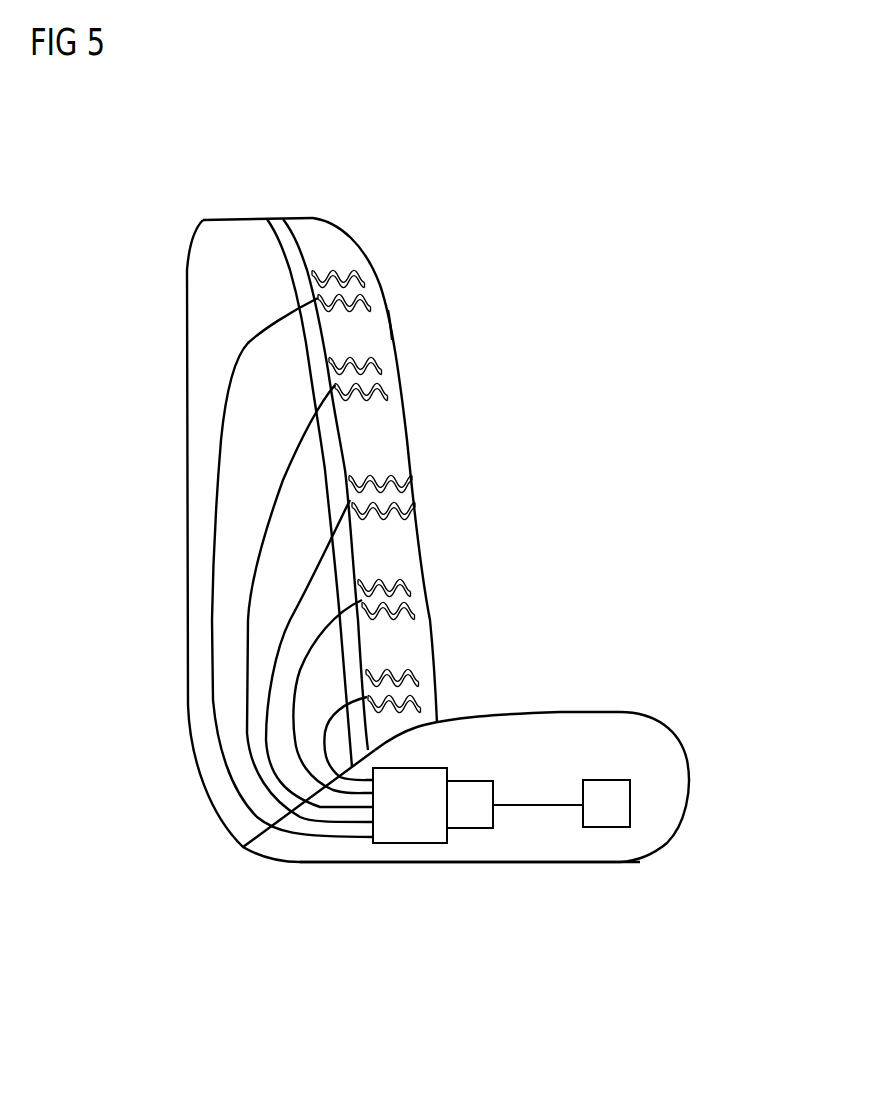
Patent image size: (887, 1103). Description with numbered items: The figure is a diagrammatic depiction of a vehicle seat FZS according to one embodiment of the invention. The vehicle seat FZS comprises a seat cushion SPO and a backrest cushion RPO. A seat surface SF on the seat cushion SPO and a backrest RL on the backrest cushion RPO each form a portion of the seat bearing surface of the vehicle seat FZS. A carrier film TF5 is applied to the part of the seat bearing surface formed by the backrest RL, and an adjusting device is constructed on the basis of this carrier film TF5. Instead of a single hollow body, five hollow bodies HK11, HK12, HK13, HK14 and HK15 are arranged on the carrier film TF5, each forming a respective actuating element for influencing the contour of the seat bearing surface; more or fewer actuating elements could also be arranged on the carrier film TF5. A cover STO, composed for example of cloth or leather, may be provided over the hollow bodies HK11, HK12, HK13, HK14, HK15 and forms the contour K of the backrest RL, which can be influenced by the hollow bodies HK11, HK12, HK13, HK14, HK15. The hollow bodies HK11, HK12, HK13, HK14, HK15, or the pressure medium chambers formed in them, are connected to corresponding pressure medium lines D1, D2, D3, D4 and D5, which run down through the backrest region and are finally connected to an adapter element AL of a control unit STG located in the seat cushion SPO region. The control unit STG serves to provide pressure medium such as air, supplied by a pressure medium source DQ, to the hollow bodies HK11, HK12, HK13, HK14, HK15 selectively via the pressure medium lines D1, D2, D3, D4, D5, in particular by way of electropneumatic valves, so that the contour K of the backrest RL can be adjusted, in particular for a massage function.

The backrest RL is at (405, 425).
The backrest cushion RPO is at (222, 287).
The cover STO is at (343, 245).
The contour K is at (400, 322).
The carrier film TF5 is at (290, 246).
The hollow body HK11 is at (365, 283).
The hollow body HK12 is at (393, 367).
The hollow body HK13 is at (410, 487).
The hollow body HK14 is at (420, 592).
The hollow body HK15 is at (423, 687).
The pressure medium line D1 is at (220, 418).
The pressure medium line D2 is at (262, 586).
The pressure medium line D3 is at (266, 658).
The pressure medium line D4 is at (292, 708).
The pressure medium line D5 is at (322, 747).
The vehicle seat FZS is at (680, 847).
The seat surface SF is at (618, 705).
The adapter element AL is at (410, 830).
The control unit STG is at (472, 815).
The seat cushion SPO is at (545, 825).
The pressure medium source DQ is at (605, 817).